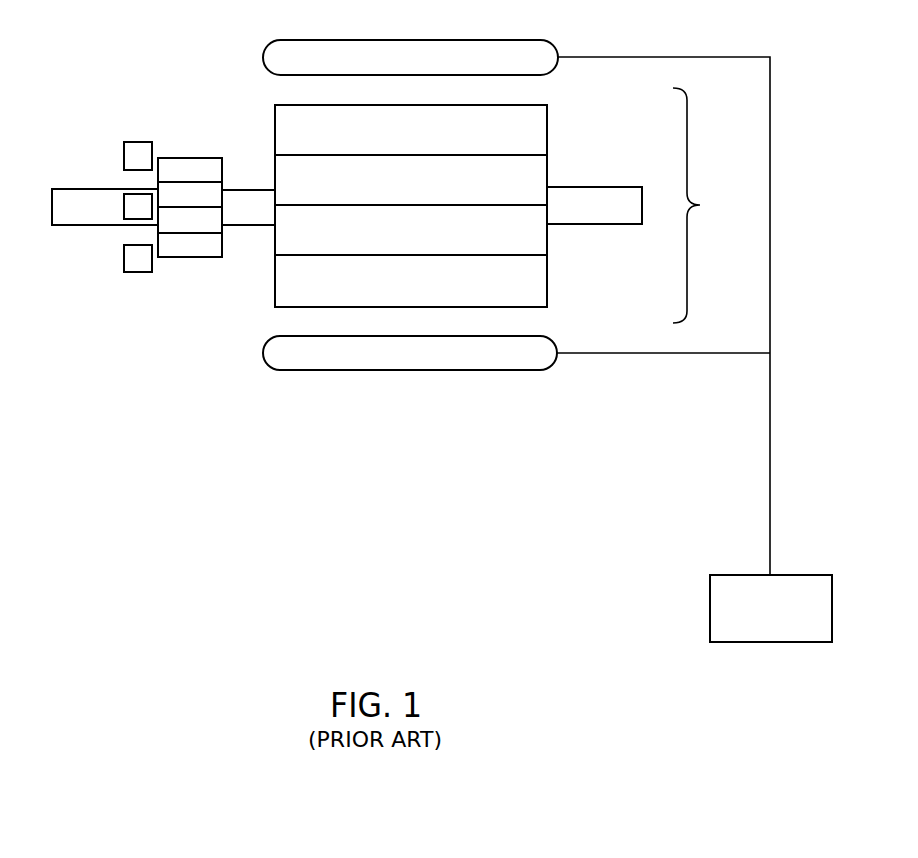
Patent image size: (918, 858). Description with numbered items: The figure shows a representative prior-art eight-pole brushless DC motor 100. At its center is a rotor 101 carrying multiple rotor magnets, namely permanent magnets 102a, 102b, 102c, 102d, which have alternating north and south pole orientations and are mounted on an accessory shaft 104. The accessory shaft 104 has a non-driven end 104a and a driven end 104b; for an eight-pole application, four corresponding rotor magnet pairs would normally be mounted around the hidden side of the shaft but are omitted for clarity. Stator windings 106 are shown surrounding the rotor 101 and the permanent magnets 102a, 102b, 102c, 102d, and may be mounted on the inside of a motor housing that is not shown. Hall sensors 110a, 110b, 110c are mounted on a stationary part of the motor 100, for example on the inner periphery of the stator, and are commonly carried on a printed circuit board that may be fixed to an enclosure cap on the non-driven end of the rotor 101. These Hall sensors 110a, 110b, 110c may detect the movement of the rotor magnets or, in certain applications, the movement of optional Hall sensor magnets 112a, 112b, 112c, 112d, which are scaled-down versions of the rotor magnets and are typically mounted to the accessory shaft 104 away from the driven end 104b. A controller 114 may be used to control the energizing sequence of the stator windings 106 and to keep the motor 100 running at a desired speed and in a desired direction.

The brushless DC motor 100 is at (383, 508).
The rotor 101 is at (705, 205).
The permanent magnet 102a is at (520, 141).
The permanent magnet 102b is at (520, 191).
The permanent magnet 102c is at (520, 241).
The permanent magnet 102d is at (520, 291).
The accessory shaft 104 is at (255, 193).
The non-driven end 104a is at (70, 200).
The driven end 104b is at (620, 192).
The stator windings 106 is at (515, 70).
The Hall sensor 110a is at (125, 148).
The Hall sensor 110b is at (130, 218).
The Hall sensor 110c is at (123, 270).
The Hall sensor magnet 112a is at (175, 160).
The Hall sensor magnet 112b is at (200, 190).
The Hall sensor magnet 112c is at (203, 225).
The Hall sensor magnet 112d is at (175, 255).
The controller 114 is at (808, 575).